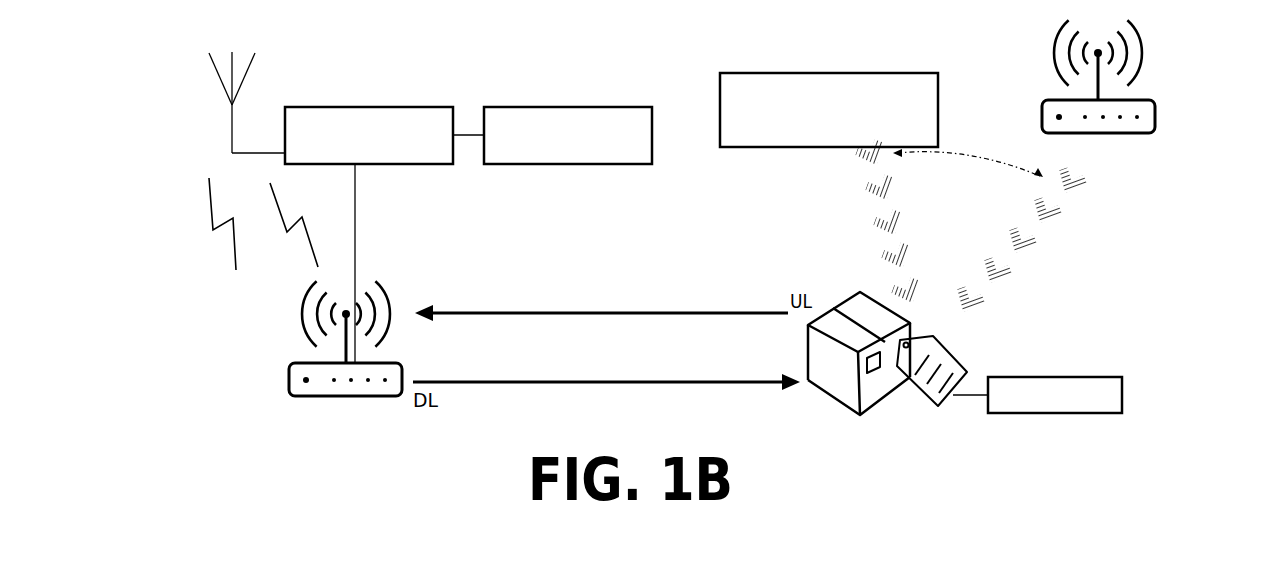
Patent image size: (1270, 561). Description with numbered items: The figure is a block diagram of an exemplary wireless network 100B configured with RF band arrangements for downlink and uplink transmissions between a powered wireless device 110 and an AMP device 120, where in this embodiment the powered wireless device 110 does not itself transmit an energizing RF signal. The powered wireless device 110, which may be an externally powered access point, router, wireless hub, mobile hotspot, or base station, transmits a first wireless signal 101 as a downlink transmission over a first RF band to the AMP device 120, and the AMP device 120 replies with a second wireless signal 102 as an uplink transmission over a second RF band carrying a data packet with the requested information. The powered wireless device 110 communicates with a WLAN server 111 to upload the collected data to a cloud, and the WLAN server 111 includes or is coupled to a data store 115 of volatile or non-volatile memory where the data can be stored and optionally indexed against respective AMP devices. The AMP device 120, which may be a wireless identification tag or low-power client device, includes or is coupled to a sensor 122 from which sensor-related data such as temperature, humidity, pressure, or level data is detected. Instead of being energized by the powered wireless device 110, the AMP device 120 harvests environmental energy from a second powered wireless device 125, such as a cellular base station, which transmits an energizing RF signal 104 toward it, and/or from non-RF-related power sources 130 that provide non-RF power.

The wireless network 100B is at (178, 107).
The powered wireless device 110 is at (289, 371).
The WLAN server 111 is at (424, 148).
The data store 115 is at (641, 148).
The first wireless signal 101 is at (606, 369).
The second wireless signal 102 is at (601, 302).
The energizing RF signal 104 is at (971, 226).
The AMP device 120 is at (943, 345).
The sensor 122 is at (1108, 408).
The second powered wireless device 125 is at (1143, 108).
The non-RF-related power sources 130 is at (833, 73).